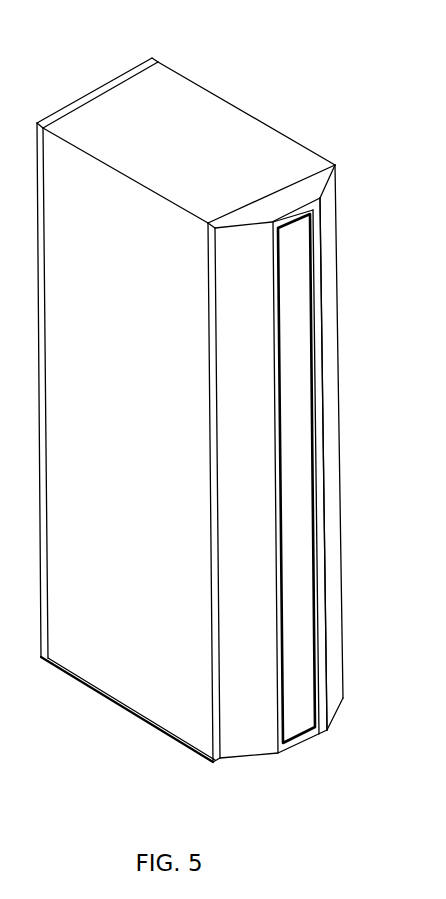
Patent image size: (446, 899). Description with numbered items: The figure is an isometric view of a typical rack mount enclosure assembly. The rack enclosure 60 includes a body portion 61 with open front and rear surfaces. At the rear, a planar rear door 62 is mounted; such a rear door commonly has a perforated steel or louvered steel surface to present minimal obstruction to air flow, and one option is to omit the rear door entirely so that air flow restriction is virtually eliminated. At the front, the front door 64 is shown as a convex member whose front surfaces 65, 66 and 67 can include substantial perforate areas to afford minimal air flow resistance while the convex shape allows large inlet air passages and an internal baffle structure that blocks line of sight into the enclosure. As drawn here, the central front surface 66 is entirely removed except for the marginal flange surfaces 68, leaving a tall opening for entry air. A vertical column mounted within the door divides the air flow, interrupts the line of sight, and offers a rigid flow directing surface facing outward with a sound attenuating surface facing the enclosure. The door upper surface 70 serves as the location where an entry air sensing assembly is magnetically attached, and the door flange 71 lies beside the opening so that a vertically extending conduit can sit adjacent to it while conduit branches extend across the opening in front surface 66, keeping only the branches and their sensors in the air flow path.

The rack enclosure 60 is at (222, 415).
The body portion 61 is at (263, 122).
The rear door 62 is at (122, 75).
The front door 64 is at (336, 235).
The front surface 65 is at (237, 750).
The front surface 66 is at (315, 259).
The front surface 67 is at (328, 408).
The marginal flange surfaces 68 is at (322, 536).
The door upper surface 70 is at (300, 188).
The door flange 71 is at (292, 598).